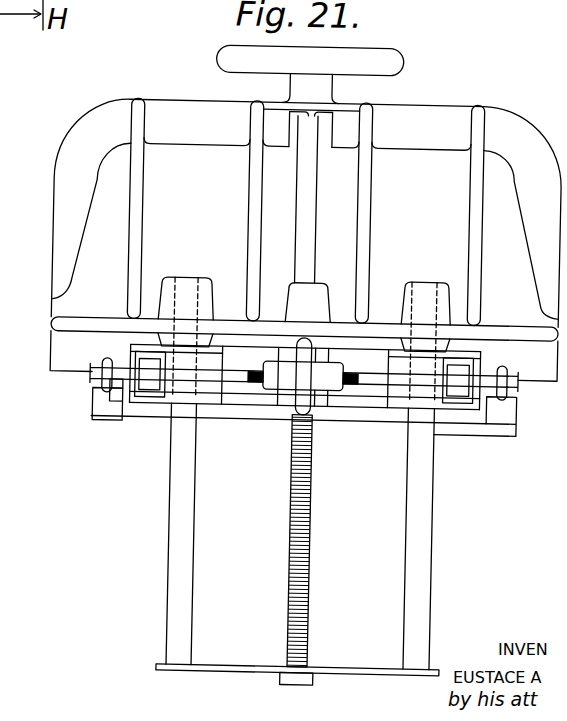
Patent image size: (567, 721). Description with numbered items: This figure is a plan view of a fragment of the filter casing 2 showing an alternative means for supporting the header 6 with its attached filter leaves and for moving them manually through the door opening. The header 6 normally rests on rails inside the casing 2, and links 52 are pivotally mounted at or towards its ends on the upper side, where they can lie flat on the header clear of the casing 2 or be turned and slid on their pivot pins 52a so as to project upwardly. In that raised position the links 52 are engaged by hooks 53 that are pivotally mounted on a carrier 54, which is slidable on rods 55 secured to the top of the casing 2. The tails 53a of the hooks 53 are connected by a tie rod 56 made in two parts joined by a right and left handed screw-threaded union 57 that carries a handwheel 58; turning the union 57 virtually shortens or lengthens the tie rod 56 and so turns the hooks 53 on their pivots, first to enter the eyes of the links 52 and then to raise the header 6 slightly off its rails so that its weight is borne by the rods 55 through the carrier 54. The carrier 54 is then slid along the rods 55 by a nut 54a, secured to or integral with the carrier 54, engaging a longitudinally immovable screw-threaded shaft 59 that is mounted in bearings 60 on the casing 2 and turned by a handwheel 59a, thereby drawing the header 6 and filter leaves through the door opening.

The casing 2 is at (306, 239).
The header 6 is at (449, 421).
The links 52 is at (111, 386).
The pivot pins 52a is at (104, 401).
The hooks 53 is at (100, 375).
The tails 53a is at (170, 378).
The carrier 54 is at (203, 393).
The nut 54a is at (320, 358).
The rods 55 is at (178, 540).
The tie rod 56 is at (183, 376).
The right and left handed screw-threaded union 57 is at (333, 384).
The handwheel 58 is at (303, 404).
The screw-threaded shaft 59 is at (325, 232).
The handwheel 59a is at (398, 62).
The bearings 60 is at (294, 138).